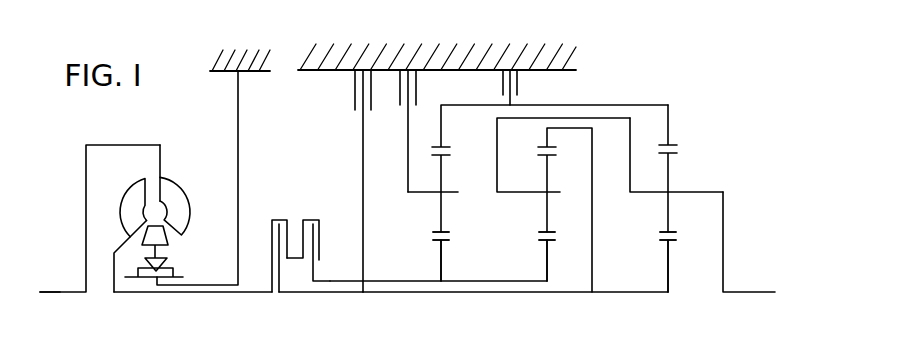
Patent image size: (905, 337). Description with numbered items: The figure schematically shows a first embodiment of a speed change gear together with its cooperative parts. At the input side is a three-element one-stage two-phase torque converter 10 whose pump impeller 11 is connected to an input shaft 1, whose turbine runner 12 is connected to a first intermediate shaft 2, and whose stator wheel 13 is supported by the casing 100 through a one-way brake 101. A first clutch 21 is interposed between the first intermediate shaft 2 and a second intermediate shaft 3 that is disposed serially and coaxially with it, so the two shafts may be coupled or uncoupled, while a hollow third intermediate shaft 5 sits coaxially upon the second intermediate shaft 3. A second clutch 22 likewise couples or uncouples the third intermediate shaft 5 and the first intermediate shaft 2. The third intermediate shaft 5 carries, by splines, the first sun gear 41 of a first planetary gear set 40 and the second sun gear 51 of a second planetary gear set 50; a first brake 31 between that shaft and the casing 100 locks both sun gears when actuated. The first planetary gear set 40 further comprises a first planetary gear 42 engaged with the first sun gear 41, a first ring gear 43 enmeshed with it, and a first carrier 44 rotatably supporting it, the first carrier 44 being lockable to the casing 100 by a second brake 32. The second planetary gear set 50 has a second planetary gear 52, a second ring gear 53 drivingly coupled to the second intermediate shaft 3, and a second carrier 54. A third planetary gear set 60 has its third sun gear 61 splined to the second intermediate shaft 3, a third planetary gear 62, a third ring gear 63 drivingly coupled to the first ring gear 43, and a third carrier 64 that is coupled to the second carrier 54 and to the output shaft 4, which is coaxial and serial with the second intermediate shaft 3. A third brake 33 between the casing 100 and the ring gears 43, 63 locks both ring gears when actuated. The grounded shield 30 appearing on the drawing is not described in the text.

The input shaft 1 is at (55, 294).
The first intermediate shaft 2 is at (155, 294).
The second intermediate shaft 3 is at (343, 294).
The output shaft 4 is at (754, 294).
The third intermediate shaft 5 is at (404, 284).
The torque converter 10 is at (157, 218).
The pump impeller 11 is at (178, 209).
The turbine runner 12 is at (137, 198).
The stator wheel 13 is at (98, 218).
The first clutch 21 is at (275, 213).
The second clutch 22 is at (316, 213).
The grounded shield 30 is at (478, 28).
The first brake 31 is at (355, 63).
The second brake 32 is at (408, 63).
The third brake 33 is at (512, 63).
The first planetary gear set 40 is at (434, 251).
The first sun gear 41 is at (441, 247).
The first planetary gear 42 is at (443, 212).
The first ring gear 43 is at (443, 125).
The first carrier 44 is at (417, 194).
The second planetary gear set 50 is at (541, 250).
The second sun gear 51 is at (548, 266).
The second planetary gear 52 is at (549, 173).
The second ring gear 53 is at (546, 146).
The second carrier 54 is at (523, 194).
The third planetary gear set 60 is at (660, 248).
The third sun gear 61 is at (670, 272).
The third planetary gear 62 is at (670, 213).
The third ring gear 63 is at (670, 128).
The third carrier 64 is at (644, 194).
The casing 100 is at (238, 71).
The one-way brake 101 is at (165, 236).